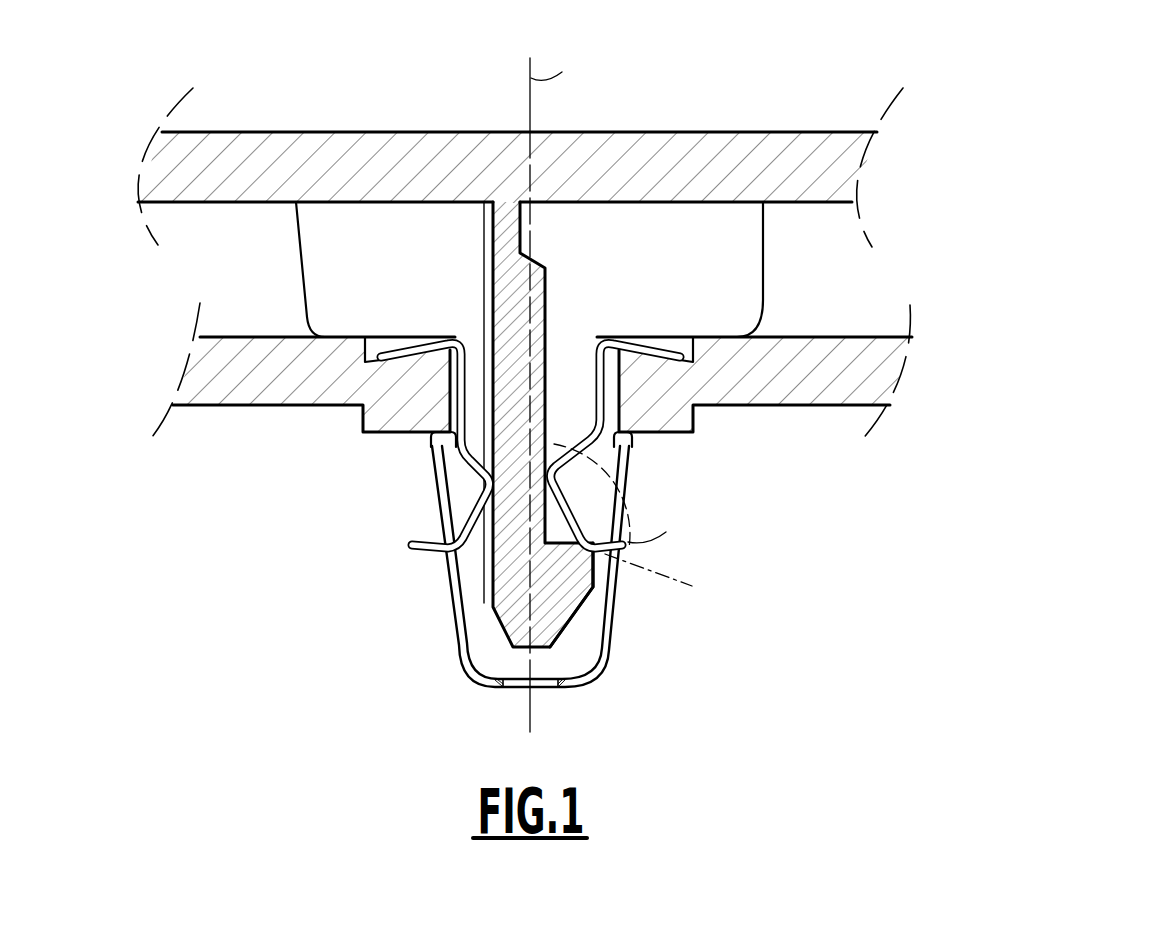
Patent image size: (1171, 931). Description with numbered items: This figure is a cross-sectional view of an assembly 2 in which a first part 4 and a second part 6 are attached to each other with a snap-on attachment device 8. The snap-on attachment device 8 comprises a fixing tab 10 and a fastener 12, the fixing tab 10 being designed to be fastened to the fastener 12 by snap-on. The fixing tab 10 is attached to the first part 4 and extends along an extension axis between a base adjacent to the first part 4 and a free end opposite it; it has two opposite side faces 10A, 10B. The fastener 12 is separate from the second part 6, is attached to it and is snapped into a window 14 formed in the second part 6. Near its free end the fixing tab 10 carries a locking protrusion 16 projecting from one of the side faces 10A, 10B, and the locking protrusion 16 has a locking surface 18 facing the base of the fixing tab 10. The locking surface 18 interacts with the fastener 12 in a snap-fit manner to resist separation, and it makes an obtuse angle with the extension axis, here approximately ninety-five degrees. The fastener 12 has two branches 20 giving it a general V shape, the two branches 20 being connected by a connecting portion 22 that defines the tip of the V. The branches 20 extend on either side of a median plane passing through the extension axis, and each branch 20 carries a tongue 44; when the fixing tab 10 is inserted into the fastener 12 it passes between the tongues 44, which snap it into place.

The assembly 2 is at (638, 389).
The first part 4 is at (893, 170).
The second part 6 is at (935, 378).
The snap-on attachment device 8 is at (470, 548).
The fixing tab 10 is at (539, 450).
The side face 10A is at (547, 305).
The side face 10B is at (490, 297).
The fastener 12 is at (538, 592).
The window 14 is at (409, 445).
The locking protrusion 16 is at (563, 585).
The locking surface 18 is at (623, 544).
The branches 20 is at (420, 612).
The connecting portion 22 is at (542, 690).
The tongue 44 is at (463, 513).